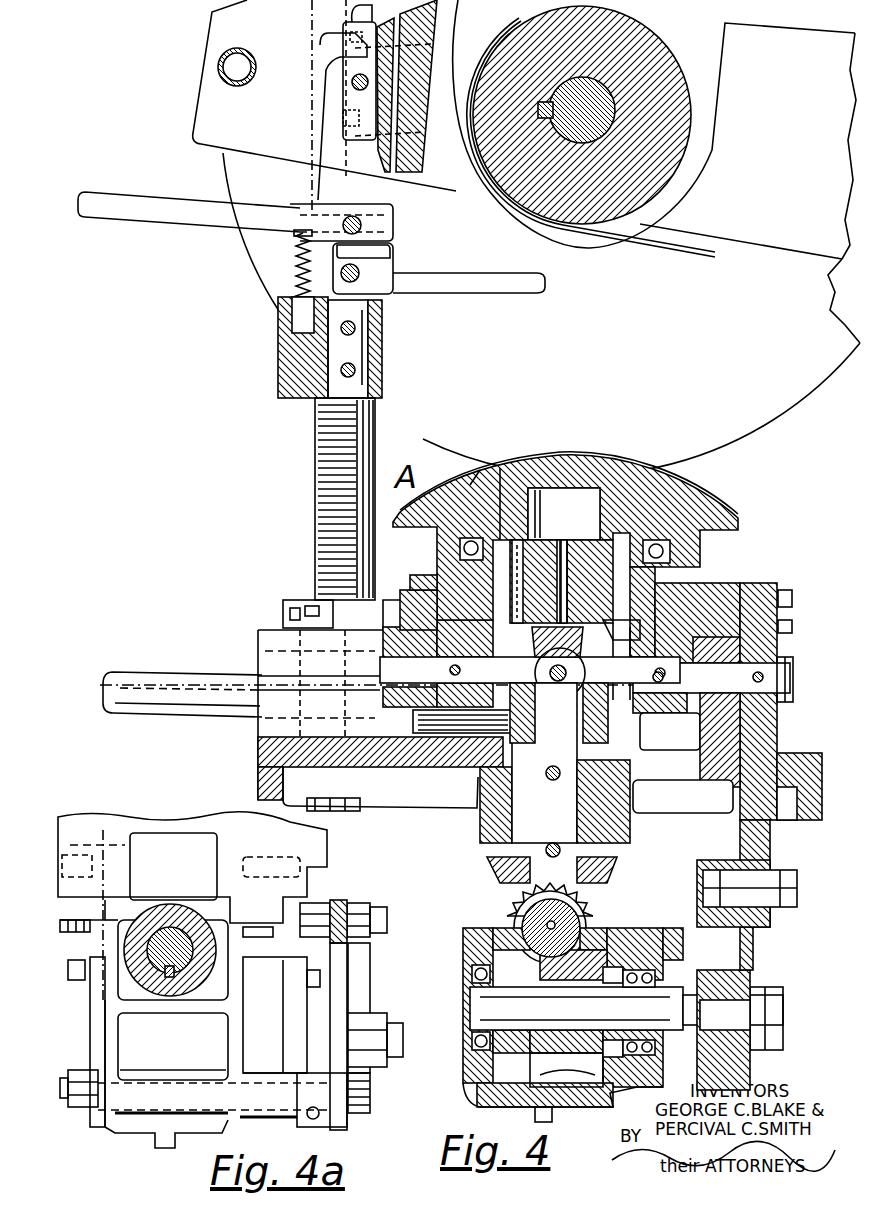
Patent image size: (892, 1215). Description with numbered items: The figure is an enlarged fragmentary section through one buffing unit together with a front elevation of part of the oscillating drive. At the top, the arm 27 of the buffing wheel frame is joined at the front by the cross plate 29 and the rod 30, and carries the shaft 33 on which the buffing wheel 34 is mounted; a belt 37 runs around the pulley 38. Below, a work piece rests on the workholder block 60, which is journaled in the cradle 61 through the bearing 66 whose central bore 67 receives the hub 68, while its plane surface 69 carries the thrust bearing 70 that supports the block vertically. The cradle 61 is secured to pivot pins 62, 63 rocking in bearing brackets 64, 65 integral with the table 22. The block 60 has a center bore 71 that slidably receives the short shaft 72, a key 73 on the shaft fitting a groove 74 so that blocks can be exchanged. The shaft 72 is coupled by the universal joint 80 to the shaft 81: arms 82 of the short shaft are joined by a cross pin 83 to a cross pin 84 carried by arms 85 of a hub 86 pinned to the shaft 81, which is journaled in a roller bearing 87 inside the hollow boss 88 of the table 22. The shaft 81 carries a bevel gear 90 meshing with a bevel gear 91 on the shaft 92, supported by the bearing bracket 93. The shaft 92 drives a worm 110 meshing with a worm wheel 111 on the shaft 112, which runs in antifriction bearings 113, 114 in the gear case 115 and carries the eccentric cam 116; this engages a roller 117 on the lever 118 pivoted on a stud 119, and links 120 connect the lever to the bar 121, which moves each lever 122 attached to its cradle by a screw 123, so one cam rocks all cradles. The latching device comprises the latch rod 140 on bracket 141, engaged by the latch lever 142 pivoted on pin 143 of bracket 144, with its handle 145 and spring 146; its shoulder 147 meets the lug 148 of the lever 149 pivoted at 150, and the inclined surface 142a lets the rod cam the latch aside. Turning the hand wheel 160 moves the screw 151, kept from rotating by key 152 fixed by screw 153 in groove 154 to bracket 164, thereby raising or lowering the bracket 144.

In FIG. 4, the table 22 is at (260, 765).
In FIG. 4A, the table 22 is at (98, 817).
In FIG. 4, the arm 27 is at (276, 150).
In FIG. 4, the cross plate 29 is at (440, 25).
In FIG. 4, the rod 30 is at (230, 85).
In FIG. 4, the shaft 33 is at (605, 92).
In FIG. 4, the buffing wheel 34 is at (790, 412).
In FIG. 4, the belt 37 is at (703, 250).
In FIG. 4, the pulley 38 is at (690, 118).
In FIG. 4, the workholder block 60 is at (665, 498).
In FIG. 4, the cradle 61 is at (735, 585).
In FIG. 4, the pivot pin 62 is at (793, 680).
In FIG. 4, the pivot pin 63 is at (395, 650).
In FIG. 4, the bearing bracket 64 is at (700, 718).
In FIG. 4, the bearing bracket 65 is at (385, 745).
In FIG. 4, the bearing 66 is at (700, 590).
In FIG. 4, the central bore 67 is at (630, 650).
In FIG. 4, the hub 68 is at (632, 490).
In FIG. 4, the plane surface 69 is at (672, 580).
In FIG. 4, the thrust bearing 70 is at (462, 546).
In FIG. 4, the center cylindrical bore 71 is at (605, 580).
In FIG. 4, the short shaft 72 is at (583, 560).
In FIG. 4, the key 73 is at (500, 468).
In FIG. 4, the groove 74 is at (493, 470).
In FIG. 4, the universal joint 80 is at (612, 722).
In FIG. 4, the shaft 81 is at (535, 858).
In FIG. 4, the arms 82 is at (535, 648).
In FIG. 4, the cross pin 83 is at (555, 682).
In FIG. 4, the cross pin 84 is at (530, 672).
In FIG. 4, the arms 85 is at (470, 730).
In FIG. 4, the hub 86 is at (540, 790).
In FIG. 4, the roller bearing 87 is at (490, 790).
In FIG. 4, the hollow boss 88 is at (632, 795).
In FIG. 4, the bevel gear 90 is at (495, 880).
In FIG. 4, the bevel gear 91 is at (600, 900).
In FIG. 4A, the bevel gear 91 is at (150, 905).
In FIG. 4, the shaft 92 is at (535, 940).
In FIG. 4A, the shaft 92 is at (178, 935).
In FIG. 4A, the bearing bracket 93 is at (145, 996).
In FIG. 4, the worm 110 is at (545, 925).
In FIG. 4, the worm wheel 111 is at (585, 945).
In FIG. 4, the shaft 112 is at (520, 1030).
In FIG. 4A, the shaft 112 is at (305, 1066).
In FIG. 4, the antifriction bearing 113 is at (470, 975).
In FIG. 4, the antifriction bearing 114 is at (645, 945).
In FIG. 4, the gear case 115 is at (480, 1100).
In FIG. 4A, the gear case 115 is at (95, 1040).
In FIG. 4, the cam 116 is at (752, 958).
In FIG. 4A, the cam 116 is at (373, 978).
In FIG. 4A, the roller 117 is at (360, 1018).
In FIG. 4A, the lever 118 is at (352, 955).
In FIG. 4A, the stud 119 is at (138, 1065).
In FIG. 4A, the links 120 is at (335, 865).
In FIG. 4, the bar 121 is at (710, 865).
In FIG. 4A, the bar 121 is at (355, 890).
In FIG. 4, the lever 122 is at (775, 840).
In FIG. 4, the screw 123 is at (793, 626).
In FIG. 4, the latch rod 140 is at (352, 84).
In FIG. 4, the bracket 141 is at (358, 12).
In FIG. 4, the latch lever 142 is at (335, 58).
In FIG. 4, the inclined surface 142a is at (352, 18).
In FIG. 4, the pin 143 is at (356, 215).
In FIG. 4, the bracket 144 is at (382, 322).
In FIG. 4, the handle 145 is at (105, 222).
In FIG. 4, the spring 146 is at (295, 270).
In FIG. 4, the shoulder 147 is at (393, 235).
In FIG. 4, the lug 148 is at (392, 260).
In FIG. 4, the lever 149 is at (460, 273).
In FIG. 4, the pivot 150 is at (358, 277).
In FIG. 4, the screw 151 is at (315, 480).
In FIG. 4, the key 152 is at (300, 600).
In FIG. 4, the screw 153 is at (290, 612).
In FIG. 4, the groove 154 is at (318, 440).
In FIG. 4, the hand wheel 160 is at (110, 672).
In FIG. 4, the bracket 164 is at (288, 604).